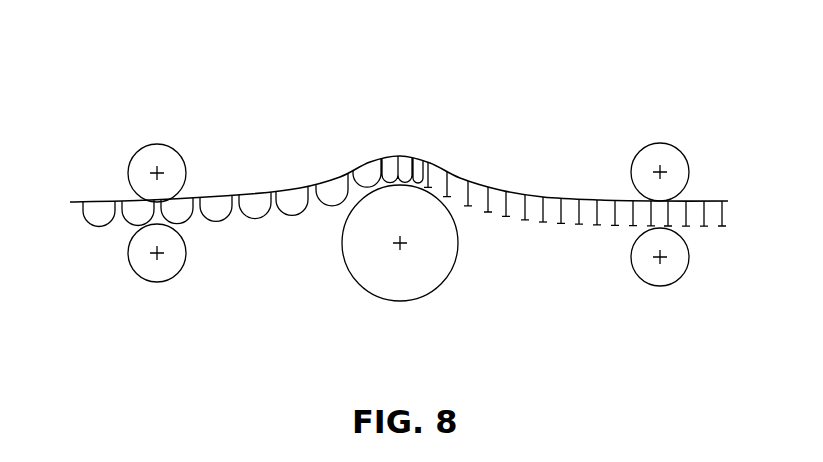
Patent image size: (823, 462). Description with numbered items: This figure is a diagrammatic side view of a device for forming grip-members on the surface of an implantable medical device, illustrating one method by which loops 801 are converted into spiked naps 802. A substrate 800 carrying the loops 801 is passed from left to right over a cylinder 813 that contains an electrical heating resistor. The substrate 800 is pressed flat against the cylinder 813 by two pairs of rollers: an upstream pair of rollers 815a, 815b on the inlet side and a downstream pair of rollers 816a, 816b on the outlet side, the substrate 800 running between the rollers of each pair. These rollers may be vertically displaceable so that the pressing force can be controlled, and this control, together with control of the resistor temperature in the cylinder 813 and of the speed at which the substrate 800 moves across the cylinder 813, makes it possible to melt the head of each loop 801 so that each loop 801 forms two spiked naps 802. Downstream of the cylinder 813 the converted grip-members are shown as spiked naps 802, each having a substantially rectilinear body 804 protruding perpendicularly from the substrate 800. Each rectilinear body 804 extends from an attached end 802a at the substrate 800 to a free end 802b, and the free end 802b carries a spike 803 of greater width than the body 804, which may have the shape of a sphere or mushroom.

The substrate 800 is at (120, 54).
The loops 801 is at (100, 230).
The spiked naps 802 is at (615, 227).
The attached end 802a is at (543, 207).
The free end 802b is at (547, 205).
The spike 803 is at (720, 228).
The rectilinear body 804 is at (724, 215).
The cylinder 813 is at (400, 301).
The upstream roller 815a is at (157, 143).
The upstream roller 815b is at (156, 282).
The downstream roller 816a is at (660, 144).
The downstream roller 816b is at (660, 286).